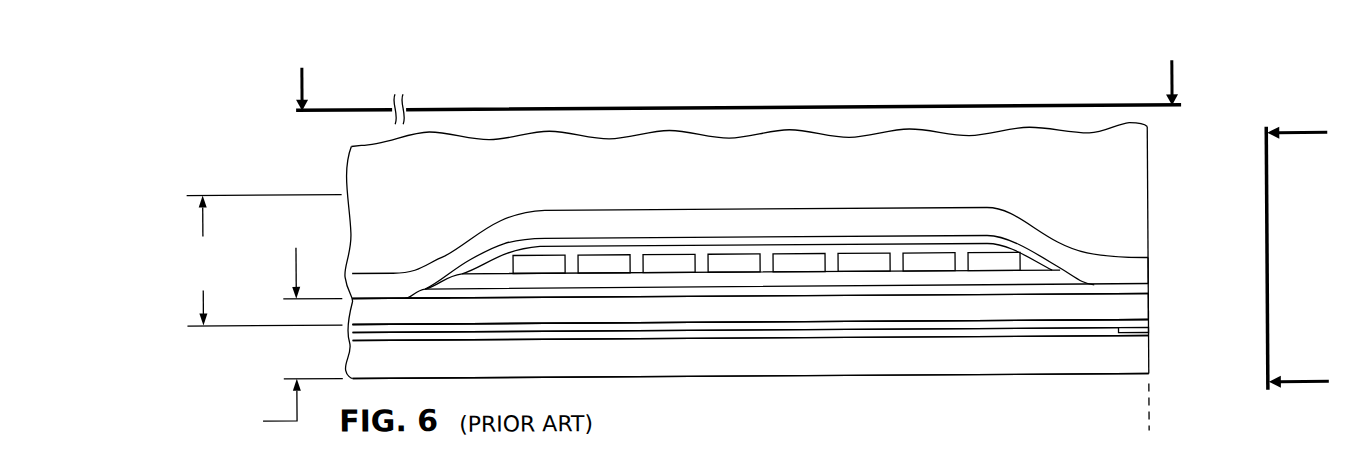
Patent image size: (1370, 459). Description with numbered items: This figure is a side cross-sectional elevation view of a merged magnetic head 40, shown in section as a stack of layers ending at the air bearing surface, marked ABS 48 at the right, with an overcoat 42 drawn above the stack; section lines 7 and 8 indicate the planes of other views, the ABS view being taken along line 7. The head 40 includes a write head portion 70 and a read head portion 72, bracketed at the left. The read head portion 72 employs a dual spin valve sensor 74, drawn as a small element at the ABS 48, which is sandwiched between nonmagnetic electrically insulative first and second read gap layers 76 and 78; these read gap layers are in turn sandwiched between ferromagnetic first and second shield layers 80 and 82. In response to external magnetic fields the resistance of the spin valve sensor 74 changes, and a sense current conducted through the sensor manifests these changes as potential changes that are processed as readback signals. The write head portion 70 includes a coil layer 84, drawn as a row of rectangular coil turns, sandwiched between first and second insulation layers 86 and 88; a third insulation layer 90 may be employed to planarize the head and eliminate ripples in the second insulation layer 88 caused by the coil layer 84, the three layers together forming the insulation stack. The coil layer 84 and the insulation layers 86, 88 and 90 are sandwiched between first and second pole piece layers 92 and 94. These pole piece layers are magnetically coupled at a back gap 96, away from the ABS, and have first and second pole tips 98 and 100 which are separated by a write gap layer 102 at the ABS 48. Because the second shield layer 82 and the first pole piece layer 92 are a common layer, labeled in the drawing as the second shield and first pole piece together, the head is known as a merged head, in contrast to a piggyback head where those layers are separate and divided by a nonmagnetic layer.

The merged magnetic head 40 is at (330, 152).
The overcoat layer 42 is at (1135, 162).
The air bearing surface (ABS) 48 is at (1148, 424).
The write head portion 70 is at (249, 261).
The read head portion 72 is at (251, 407).
The dual spin valve sensor 74 is at (1148, 333).
The first read gap layer 76 is at (817, 338).
The second read gap layer 78 is at (783, 321).
The first shield layer 80 is at (893, 361).
The second shield layer 82 is at (993, 311).
The first pole piece layer 92 is at (993, 311).
The coil layer 84 is at (732, 258).
The first insulation layer 86 is at (677, 281).
The second insulation layer 88 is at (1037, 264).
The third insulation layer 90 is at (578, 237).
The second pole piece layer 94 is at (910, 219).
The back gap 96 is at (385, 295).
The first pole tip 98 is at (1148, 312).
The second pole tip 100 is at (1142, 270).
The write gap layer 102 is at (1148, 292).
The section line 7- 7 is at (1305, 257).
The section line 8- 8 is at (738, 91).